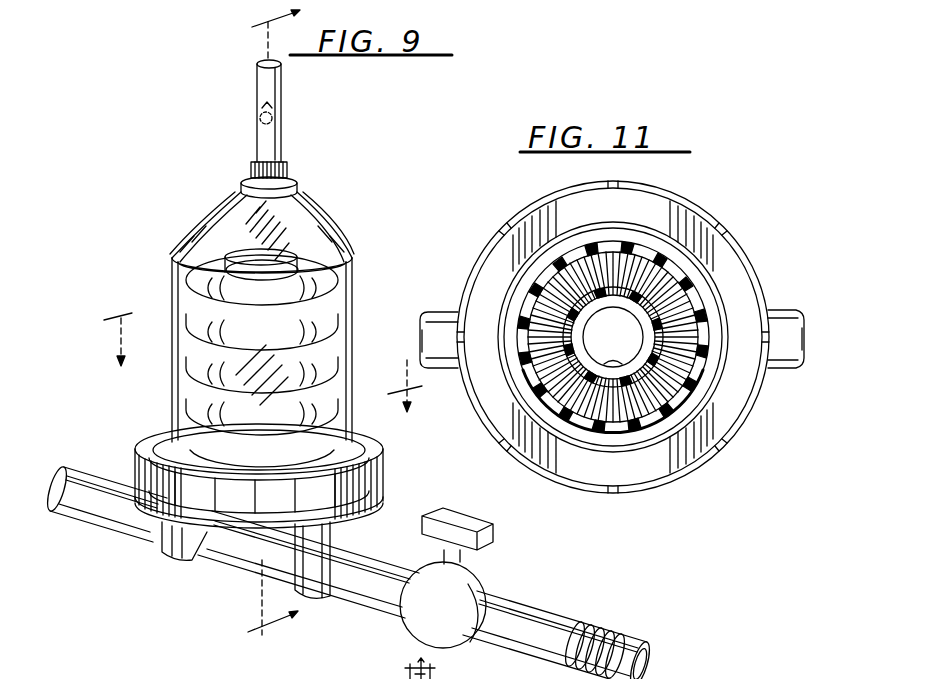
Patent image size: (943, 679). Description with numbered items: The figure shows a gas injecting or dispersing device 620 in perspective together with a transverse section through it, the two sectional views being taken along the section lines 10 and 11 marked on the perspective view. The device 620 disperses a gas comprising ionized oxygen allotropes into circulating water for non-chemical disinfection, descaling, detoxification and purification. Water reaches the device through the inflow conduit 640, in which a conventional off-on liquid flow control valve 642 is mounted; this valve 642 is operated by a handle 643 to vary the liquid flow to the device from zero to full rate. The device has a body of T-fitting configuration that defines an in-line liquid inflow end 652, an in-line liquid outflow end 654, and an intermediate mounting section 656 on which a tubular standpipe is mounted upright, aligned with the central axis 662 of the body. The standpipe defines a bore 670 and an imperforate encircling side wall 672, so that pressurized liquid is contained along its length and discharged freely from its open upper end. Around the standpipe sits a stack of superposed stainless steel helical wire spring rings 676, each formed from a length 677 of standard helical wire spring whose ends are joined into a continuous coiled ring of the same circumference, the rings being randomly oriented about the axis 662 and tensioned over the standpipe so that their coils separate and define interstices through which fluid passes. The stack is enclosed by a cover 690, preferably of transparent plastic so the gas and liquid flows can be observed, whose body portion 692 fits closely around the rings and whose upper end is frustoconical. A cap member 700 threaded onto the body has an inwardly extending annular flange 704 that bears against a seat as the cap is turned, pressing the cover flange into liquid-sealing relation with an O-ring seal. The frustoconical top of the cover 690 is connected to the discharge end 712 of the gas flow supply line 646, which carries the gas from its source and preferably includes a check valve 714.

In FIG. 9, the section line 10— 10 is at (271, 332).
In FIG. 9, the section line 11— 11 is at (256, 361).
In FIG. 9, the gas injecting or dispersing device 620 is at (341, 244).
In FIG. 11, the gas injecting or dispersing device 620 is at (713, 476).
In FIG. 9, the inflow conduit 640 is at (563, 618).
In FIG. 11, the inflow conduit 640 is at (783, 370).
In FIG. 9, the off-on liquid flow control valve 642 is at (490, 567).
In FIG. 9, the handle 643 is at (88, 480).
In FIG. 11, the handle 643 is at (442, 318).
In FIG. 9, the gas flow supply line 646 is at (404, 668).
In FIG. 9, the in-line liquid inflow end 652 is at (355, 533).
In FIG. 9, the in-line liquid outflow end 654 is at (162, 537).
In FIG. 9, the mounting section 656 is at (232, 560).
In FIG. 11, the mounting section 656 is at (587, 260).
In FIG. 11, the central axis 662 is at (613, 335).
In FIG. 11, the bore 670 is at (590, 433).
In FIG. 11, the side wall 672 is at (673, 273).
In FIG. 11, the helical wire spring rings 676 is at (550, 411).
In FIG. 11, the length of helical wire spring 677 is at (543, 395).
In FIG. 9, the cover 690 is at (318, 214).
In FIG. 11, the cover 690 is at (540, 265).
In FIG. 9, the body portion 692 is at (348, 340).
In FIG. 9, the cap member 700 is at (383, 470).
In FIG. 9, the annular flange 704 is at (357, 445).
In FIG. 9, the discharge end 712 is at (272, 147).
In FIG. 9, the check valve 714 is at (258, 117).